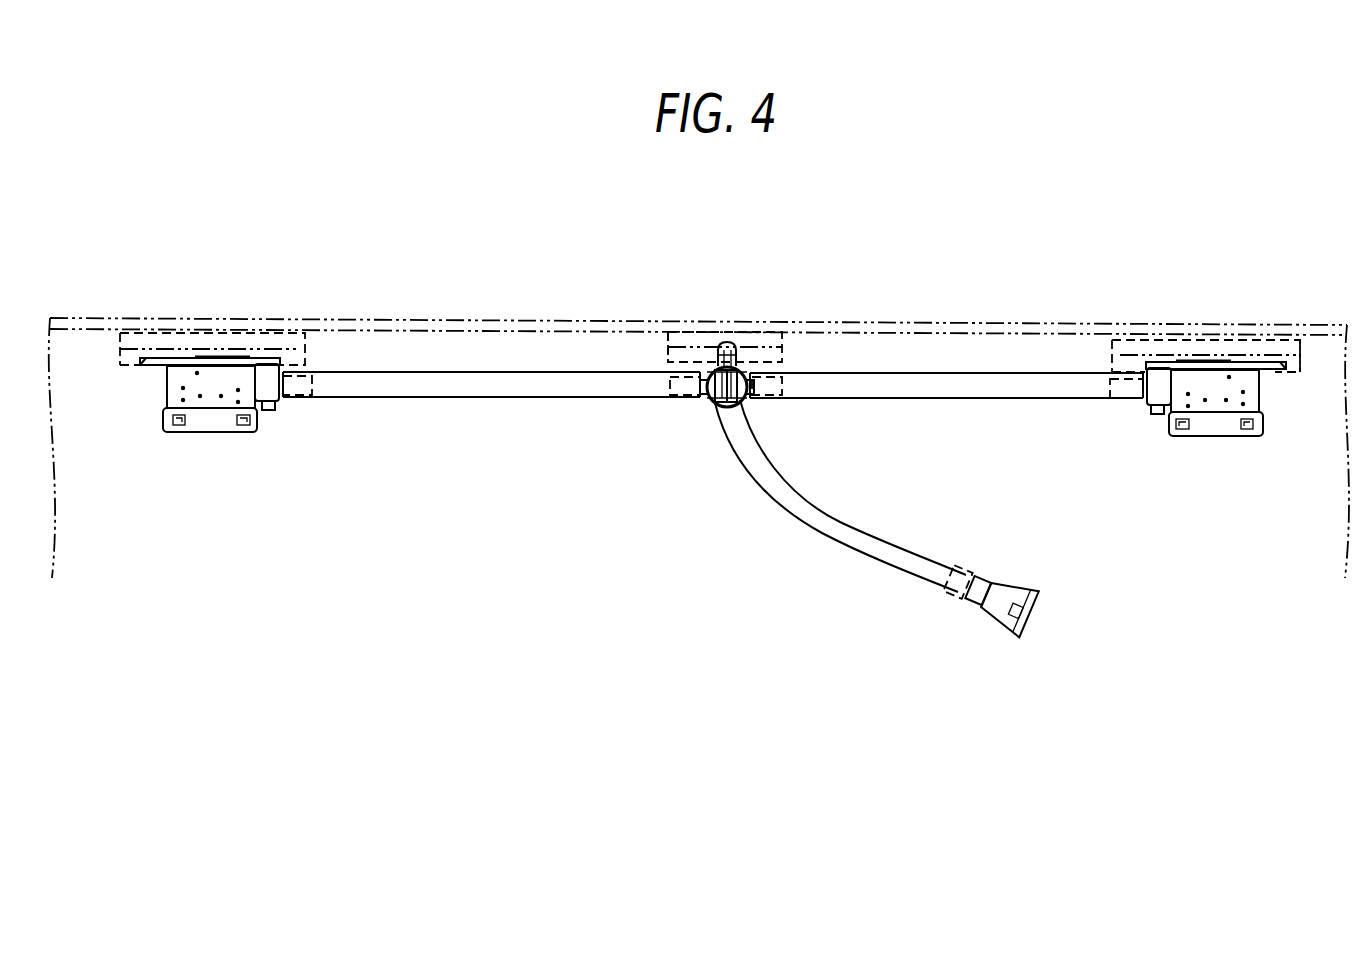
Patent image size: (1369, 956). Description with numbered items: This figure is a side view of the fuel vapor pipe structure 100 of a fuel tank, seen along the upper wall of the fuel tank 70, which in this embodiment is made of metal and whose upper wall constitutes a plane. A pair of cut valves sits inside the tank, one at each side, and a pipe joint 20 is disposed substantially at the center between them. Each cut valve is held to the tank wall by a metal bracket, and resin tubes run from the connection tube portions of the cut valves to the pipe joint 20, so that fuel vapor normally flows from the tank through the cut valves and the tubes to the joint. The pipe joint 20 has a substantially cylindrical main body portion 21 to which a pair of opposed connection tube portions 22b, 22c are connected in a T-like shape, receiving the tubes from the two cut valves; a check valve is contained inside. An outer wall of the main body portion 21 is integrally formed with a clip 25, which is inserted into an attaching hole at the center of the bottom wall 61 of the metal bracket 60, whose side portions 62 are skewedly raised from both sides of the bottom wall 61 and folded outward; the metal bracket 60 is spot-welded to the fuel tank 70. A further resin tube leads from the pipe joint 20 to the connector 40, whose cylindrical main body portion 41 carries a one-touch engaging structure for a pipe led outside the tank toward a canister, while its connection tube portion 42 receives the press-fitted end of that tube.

The pipe joint 20 is at (745, 368).
The main body portion 21 is at (720, 412).
The connection tube portion 22b is at (712, 405).
The connection tube portion 22c is at (745, 412).
The clip 25 is at (725, 343).
The connector 40 is at (984, 602).
The main body portion 41 is at (1002, 598).
The connection tube portion 42 is at (948, 575).
The metal bracket 60 is at (787, 351).
The bottom wall 61 is at (758, 335).
The side portions 62 is at (680, 335).
The fuel tank 70 is at (930, 327).
The fuel vapor pipe structure 100 is at (548, 492).